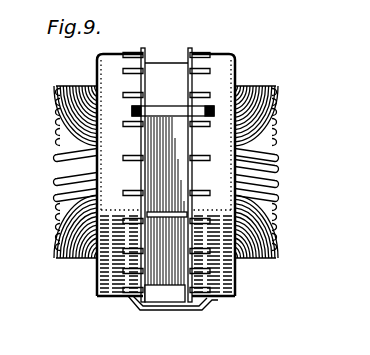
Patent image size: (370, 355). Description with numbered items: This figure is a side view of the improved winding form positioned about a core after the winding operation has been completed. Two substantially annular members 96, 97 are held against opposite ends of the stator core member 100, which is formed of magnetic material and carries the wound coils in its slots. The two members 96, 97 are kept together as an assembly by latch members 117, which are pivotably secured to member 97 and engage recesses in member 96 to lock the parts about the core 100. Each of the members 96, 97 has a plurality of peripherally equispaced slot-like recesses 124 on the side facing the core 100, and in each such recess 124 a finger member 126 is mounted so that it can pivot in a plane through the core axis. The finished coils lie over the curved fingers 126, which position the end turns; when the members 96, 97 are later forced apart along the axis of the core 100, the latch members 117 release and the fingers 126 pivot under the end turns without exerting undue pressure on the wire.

The annular member 96 is at (108, 63).
The annular member 97 is at (222, 62).
The stator core member 100 is at (171, 272).
The latch member 117 is at (167, 106).
The slot-like recess 124 is at (200, 53).
The finger member 126 is at (274, 182).